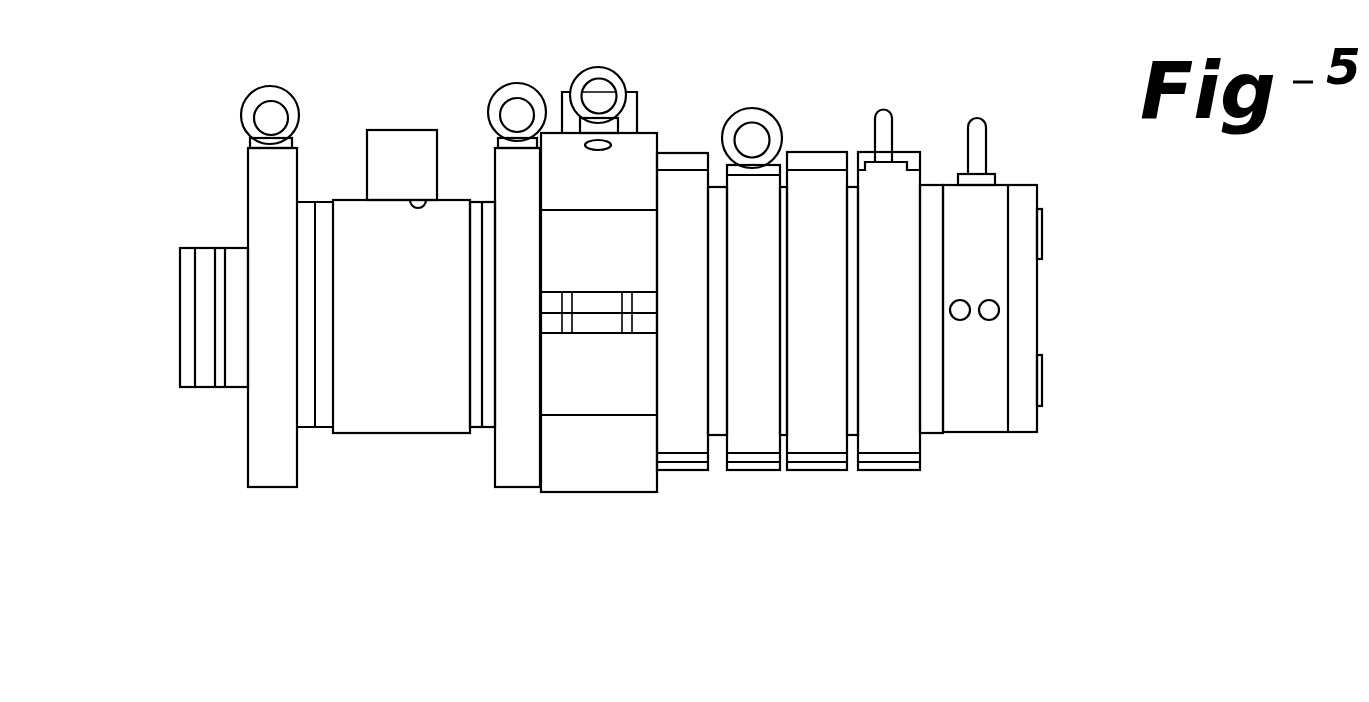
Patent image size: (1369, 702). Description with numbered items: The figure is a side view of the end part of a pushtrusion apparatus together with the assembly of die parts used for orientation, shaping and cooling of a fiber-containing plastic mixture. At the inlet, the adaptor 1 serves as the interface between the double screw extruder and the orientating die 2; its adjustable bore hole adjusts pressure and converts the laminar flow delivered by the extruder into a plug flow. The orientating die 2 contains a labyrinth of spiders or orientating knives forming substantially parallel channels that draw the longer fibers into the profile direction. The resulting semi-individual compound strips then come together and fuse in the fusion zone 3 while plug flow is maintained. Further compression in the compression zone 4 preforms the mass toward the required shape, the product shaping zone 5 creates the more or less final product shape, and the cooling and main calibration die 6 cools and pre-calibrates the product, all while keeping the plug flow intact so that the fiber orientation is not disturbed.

The adaptor 1 is at (181, 313).
The orientating die 2 is at (420, 315).
The fusion zone 3 is at (593, 492).
The compression zone 4 is at (848, 492).
The product shaping zone 5 is at (888, 470).
The cooling and main calibration die 6 is at (1038, 302).